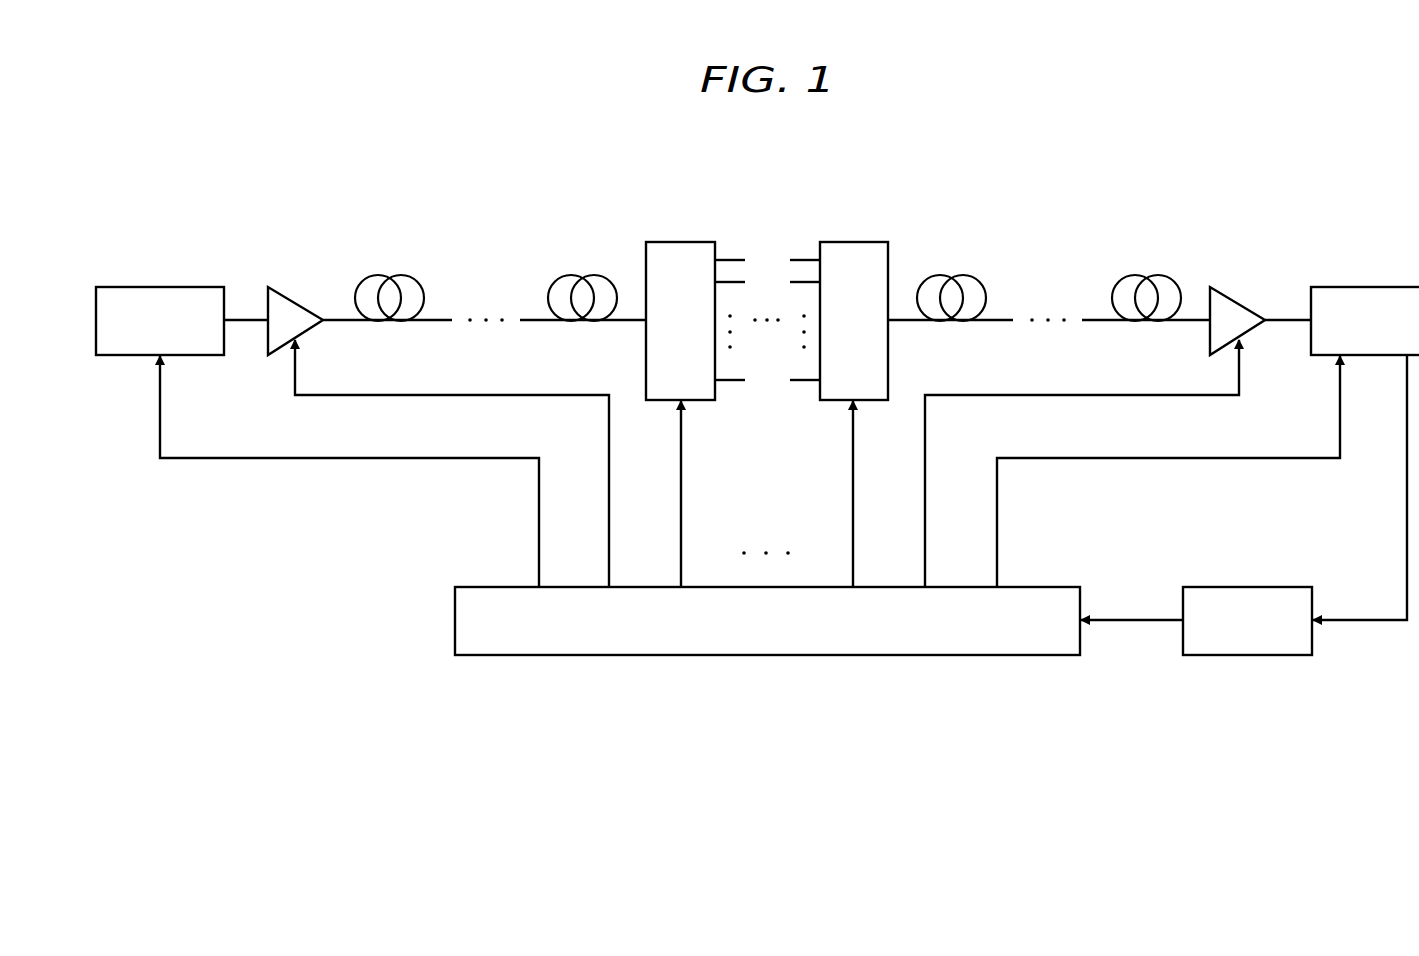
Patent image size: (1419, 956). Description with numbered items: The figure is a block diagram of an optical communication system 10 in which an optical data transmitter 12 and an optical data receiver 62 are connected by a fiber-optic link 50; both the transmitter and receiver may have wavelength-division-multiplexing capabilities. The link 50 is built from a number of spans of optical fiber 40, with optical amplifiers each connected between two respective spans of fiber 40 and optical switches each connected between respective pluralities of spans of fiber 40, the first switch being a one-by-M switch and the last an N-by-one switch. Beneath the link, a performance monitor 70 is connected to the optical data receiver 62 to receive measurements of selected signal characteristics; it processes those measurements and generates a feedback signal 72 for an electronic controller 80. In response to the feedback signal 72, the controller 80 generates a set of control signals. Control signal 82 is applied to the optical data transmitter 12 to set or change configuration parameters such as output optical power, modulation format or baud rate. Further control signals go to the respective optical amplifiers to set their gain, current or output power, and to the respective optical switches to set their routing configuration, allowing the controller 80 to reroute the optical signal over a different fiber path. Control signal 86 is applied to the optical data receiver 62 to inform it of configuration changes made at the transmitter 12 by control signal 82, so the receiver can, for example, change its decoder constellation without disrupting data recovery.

The optical communication system 10 is at (779, 136).
The optical data transmitter 12 is at (160, 287).
The span of optical fiber 40 is at (380, 284).
The fiber-optic link 50 is at (799, 270).
The optical data receiver 62 is at (1374, 287).
The performance monitor 70 is at (1257, 587).
The feedback signal 72 is at (1135, 623).
The electronic controller 80 is at (1025, 587).
The control signal 82 is at (462, 458).
The control signal 86 is at (1124, 458).